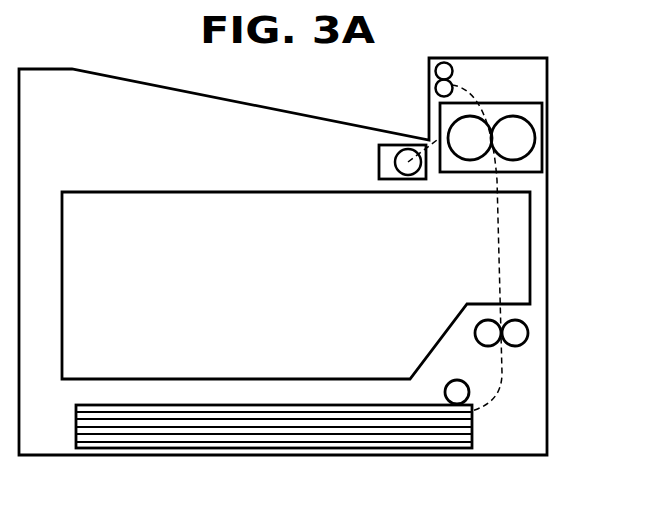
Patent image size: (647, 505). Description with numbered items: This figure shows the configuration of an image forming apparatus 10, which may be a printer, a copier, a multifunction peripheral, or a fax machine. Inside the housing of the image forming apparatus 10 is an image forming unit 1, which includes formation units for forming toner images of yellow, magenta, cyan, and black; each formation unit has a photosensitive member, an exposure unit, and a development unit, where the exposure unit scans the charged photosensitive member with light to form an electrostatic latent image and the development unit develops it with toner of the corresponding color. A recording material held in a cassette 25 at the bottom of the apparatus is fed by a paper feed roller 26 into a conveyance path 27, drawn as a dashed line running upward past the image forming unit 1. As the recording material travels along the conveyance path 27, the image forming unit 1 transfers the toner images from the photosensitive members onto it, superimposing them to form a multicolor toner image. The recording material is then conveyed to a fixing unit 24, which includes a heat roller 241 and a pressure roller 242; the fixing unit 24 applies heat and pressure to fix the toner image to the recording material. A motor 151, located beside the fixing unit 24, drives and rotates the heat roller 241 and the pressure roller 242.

The image forming apparatus 10 is at (545, 68).
The image forming unit 1 is at (525, 205).
The fixing unit 24 is at (543, 162).
The pressure roller 242 is at (530, 128).
The heat roller 241 is at (455, 128).
The motor 151 is at (378, 155).
The paper feed roller 26 is at (457, 381).
The cassette 25 is at (76, 428).
The conveyance path 27 is at (502, 373).